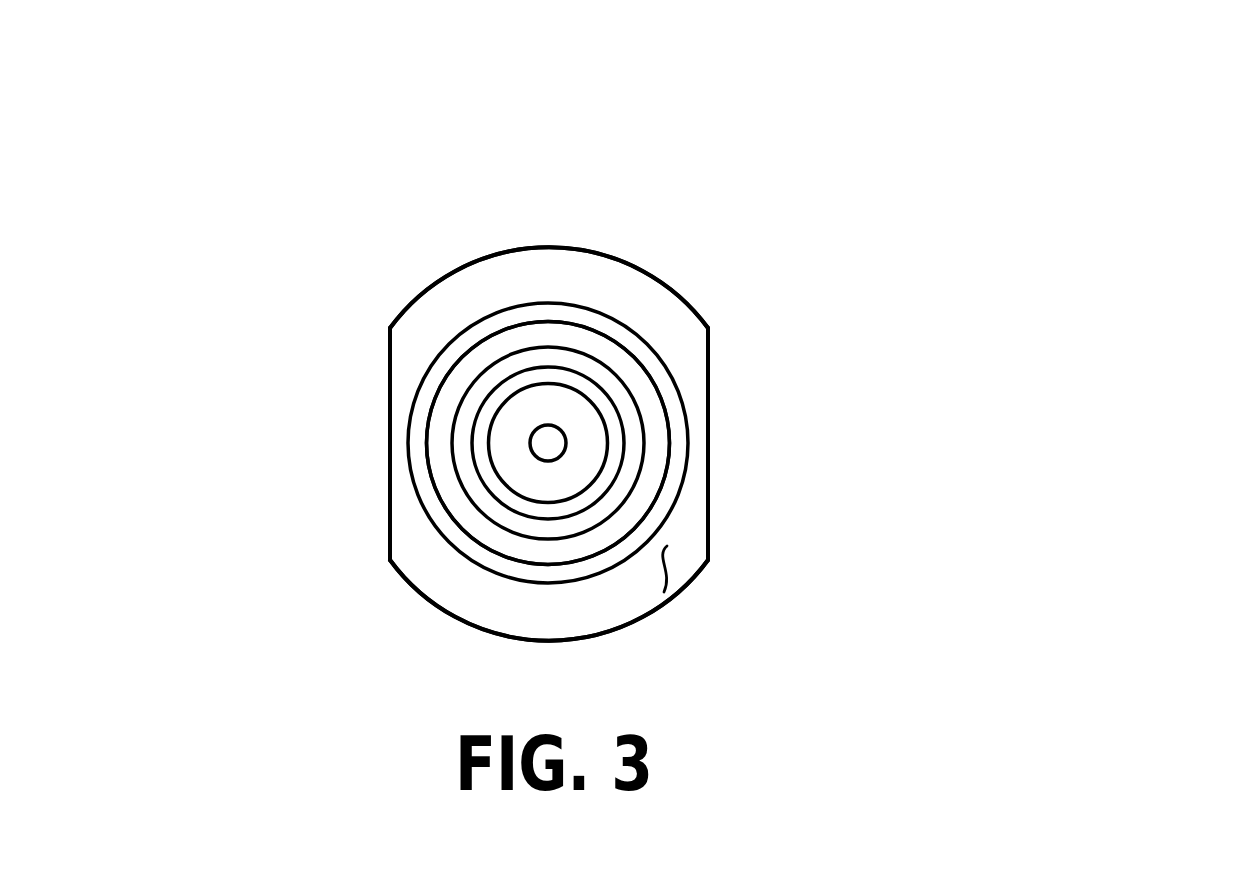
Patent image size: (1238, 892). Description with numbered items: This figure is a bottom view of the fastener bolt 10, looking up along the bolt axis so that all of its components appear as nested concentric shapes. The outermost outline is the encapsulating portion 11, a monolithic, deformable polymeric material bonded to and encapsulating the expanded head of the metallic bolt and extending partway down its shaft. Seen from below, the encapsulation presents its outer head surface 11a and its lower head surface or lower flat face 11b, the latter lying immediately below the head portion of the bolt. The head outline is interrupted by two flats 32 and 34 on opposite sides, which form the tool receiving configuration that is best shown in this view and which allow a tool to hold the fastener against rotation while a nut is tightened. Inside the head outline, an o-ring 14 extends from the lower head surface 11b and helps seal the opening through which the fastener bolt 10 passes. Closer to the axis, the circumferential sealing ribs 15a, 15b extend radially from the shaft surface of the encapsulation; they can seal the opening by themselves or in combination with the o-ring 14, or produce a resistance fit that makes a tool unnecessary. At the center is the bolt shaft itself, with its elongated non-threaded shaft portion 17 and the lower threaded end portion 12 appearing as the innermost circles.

The fastener bolt 10 is at (650, 224).
The encapsulating portion 11 is at (433, 310).
The outer head surface 11a is at (460, 262).
The lower head surface 11b is at (666, 550).
The lower threaded end portion 12 is at (517, 468).
The o-ring 14 is at (638, 350).
The circumferential sealing rib 15a is at (652, 413).
The circumferential sealing rib 15b is at (652, 413).
The non-threaded shaft portion 17 is at (507, 442).
The flat 32 is at (390, 395).
The flat 34 is at (710, 435).